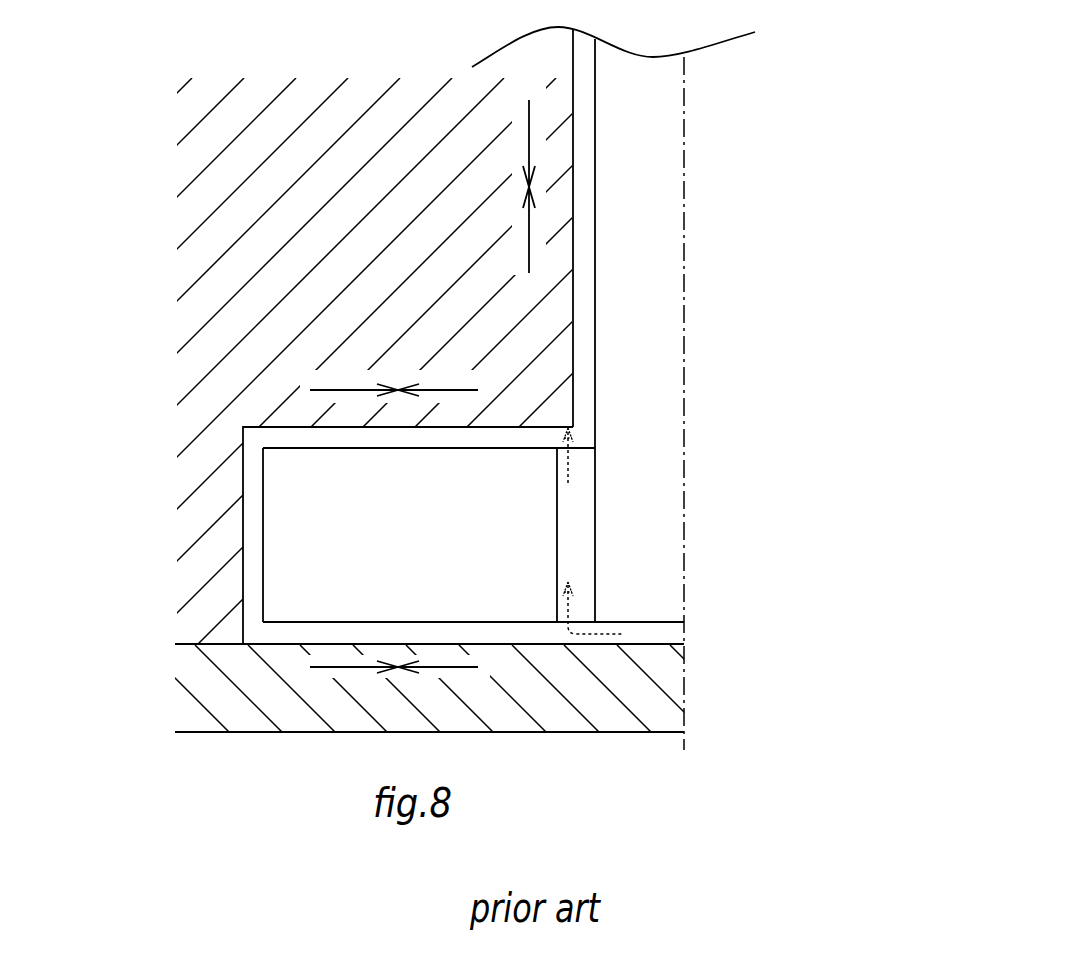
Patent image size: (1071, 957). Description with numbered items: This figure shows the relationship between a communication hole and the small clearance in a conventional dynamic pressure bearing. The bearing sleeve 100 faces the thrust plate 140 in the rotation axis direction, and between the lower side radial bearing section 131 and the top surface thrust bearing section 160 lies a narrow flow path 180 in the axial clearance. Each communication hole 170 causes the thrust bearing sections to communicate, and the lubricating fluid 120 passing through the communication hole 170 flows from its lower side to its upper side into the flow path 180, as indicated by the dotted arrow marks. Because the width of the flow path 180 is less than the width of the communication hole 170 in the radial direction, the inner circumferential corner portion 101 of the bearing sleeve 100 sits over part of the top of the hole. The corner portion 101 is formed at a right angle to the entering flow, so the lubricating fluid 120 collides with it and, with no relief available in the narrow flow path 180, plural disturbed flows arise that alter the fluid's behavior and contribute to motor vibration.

The bearing sleeve 100 is at (278, 188).
The inner circumferential corner portion 101 is at (557, 402).
The lubricating fluid 120 is at (253, 538).
The lower side radial dynamic pressure bearing section 131 is at (535, 213).
The thrust plate 140 is at (345, 517).
The top surface thrust dynamic pressure bearing section 160 is at (325, 448).
The communication hole 170 is at (582, 553).
The flow path 180 is at (583, 432).